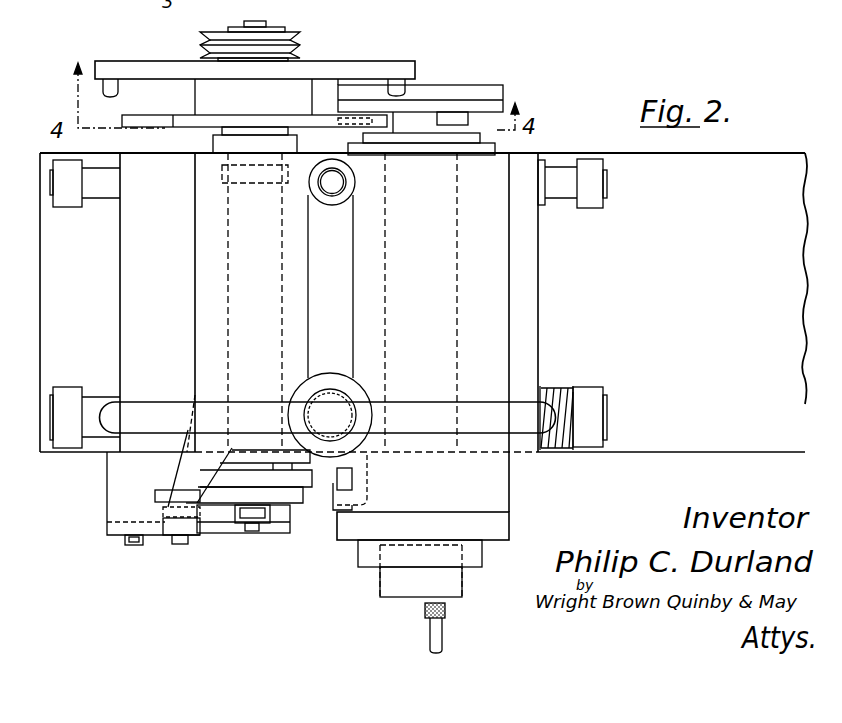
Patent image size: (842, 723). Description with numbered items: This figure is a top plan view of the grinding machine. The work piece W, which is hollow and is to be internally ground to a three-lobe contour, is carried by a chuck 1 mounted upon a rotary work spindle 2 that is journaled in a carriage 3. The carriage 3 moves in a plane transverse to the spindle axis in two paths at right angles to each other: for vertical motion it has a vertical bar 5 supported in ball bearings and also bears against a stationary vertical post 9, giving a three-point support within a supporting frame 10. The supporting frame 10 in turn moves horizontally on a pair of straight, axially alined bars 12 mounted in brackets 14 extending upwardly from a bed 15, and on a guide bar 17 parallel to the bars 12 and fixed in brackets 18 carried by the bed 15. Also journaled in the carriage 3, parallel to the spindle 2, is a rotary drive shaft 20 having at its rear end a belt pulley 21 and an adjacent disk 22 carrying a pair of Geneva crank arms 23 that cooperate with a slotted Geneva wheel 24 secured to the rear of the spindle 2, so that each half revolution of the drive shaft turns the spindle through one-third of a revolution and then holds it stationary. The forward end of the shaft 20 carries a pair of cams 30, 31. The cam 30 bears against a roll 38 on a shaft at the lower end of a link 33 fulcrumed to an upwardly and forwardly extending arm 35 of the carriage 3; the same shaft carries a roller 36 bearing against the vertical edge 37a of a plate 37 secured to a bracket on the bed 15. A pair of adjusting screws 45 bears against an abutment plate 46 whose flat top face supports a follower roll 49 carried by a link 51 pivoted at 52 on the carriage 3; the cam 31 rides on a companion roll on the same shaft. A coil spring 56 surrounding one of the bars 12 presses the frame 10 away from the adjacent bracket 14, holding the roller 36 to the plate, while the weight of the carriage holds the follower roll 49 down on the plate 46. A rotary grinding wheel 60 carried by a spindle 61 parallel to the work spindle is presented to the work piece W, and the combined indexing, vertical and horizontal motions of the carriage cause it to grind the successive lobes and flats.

The chuck 1 is at (372, 570).
The rotary work spindle 2 is at (457, 226).
The carriage 3 is at (495, 309).
The vertical bar 5 is at (326, 408).
The stationary vertical post 9 is at (334, 196).
The supporting frame 10 is at (470, 412).
The bars 12 is at (105, 398).
The brackets 14 is at (64, 395).
The bed 15 is at (752, 172).
The guide bar 17 is at (562, 192).
The brackets 18 is at (73, 203).
The rotary drive shaft 20 is at (228, 228).
The belt pulley 21 is at (300, 52).
The disk 22 is at (400, 67).
The Geneva crank arms 23 is at (120, 88).
The slotted Geneva wheel 24 is at (490, 92).
The cam 30 is at (300, 495).
The cam 31 is at (313, 478).
The link 33 is at (163, 512).
The arm 35 is at (186, 442).
The roller 36 is at (178, 537).
The plate 37 is at (112, 526).
The vertical edge 37a is at (190, 500).
The roll 38 is at (155, 497).
The adjusting screws 45 is at (236, 16).
The abutment plate 46 is at (218, 515).
The follower roll 49 is at (264, 526).
The link 51 is at (333, 510).
The pivot 52 is at (358, 522).
The coil spring 56 is at (565, 386).
The rotary grinding wheel 60 is at (426, 612).
The spindle 61 is at (430, 642).
The work piece W is at (390, 590).